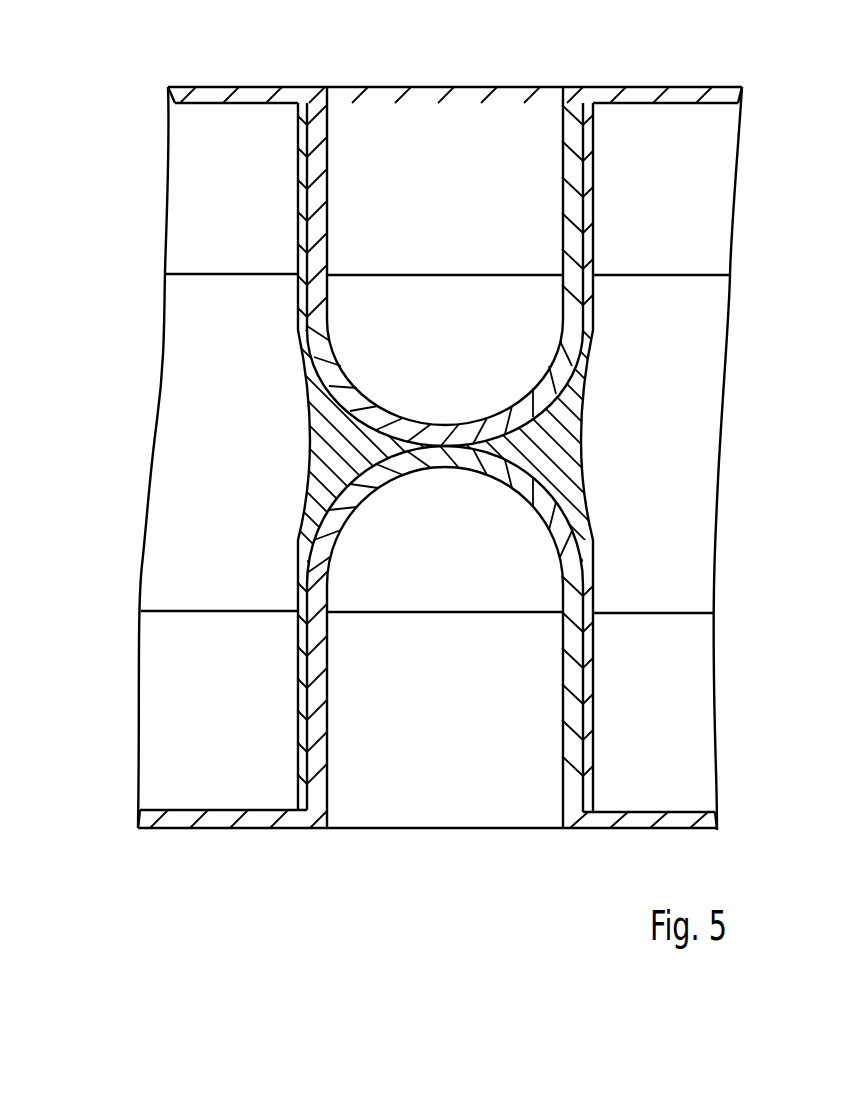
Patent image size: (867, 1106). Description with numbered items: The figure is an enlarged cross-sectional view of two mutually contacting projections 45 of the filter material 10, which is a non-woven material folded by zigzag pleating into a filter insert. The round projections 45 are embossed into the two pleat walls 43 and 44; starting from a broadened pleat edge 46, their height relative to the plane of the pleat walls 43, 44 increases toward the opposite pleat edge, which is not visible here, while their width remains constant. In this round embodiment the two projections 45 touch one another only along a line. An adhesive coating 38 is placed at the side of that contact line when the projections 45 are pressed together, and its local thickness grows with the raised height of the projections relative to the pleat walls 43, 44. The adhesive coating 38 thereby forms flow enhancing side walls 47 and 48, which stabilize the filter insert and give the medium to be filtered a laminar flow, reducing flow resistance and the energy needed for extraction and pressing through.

The filter material 10 is at (693, 690).
The adhesive coating 38 is at (588, 388).
The pleat wall 43 is at (710, 93).
The pleat wall 44 is at (684, 822).
The projection 45 is at (328, 353).
The broadened pleat edge 46 is at (177, 416).
The flow enhancing side wall 47 is at (585, 483).
The flow enhancing side wall 48 is at (308, 463).